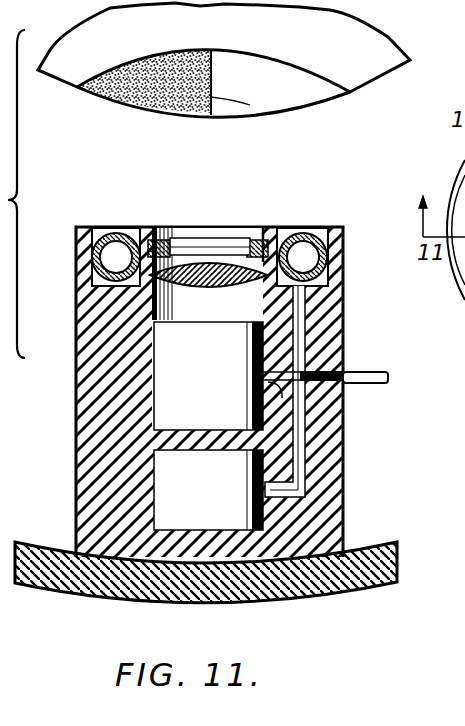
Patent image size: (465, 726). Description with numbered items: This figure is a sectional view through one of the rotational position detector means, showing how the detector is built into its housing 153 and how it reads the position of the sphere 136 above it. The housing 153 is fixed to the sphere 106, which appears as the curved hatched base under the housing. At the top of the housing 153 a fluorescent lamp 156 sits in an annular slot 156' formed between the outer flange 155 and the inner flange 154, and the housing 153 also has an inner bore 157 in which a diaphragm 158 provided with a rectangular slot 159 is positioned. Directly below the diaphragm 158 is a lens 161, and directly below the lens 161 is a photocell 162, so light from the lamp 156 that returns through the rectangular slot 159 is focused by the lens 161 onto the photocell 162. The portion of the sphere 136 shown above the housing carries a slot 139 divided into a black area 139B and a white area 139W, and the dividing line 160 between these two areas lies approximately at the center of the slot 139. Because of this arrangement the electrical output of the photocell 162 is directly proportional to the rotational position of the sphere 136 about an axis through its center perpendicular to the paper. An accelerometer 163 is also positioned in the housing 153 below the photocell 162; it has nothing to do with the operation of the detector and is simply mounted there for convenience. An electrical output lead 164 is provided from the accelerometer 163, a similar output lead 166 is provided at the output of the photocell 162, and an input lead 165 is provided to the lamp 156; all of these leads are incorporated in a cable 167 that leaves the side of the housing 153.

The sphere 106 is at (295, 595).
The sphere 136 is at (390, 42).
The slot 139 is at (234, 50).
The black area 139B is at (132, 60).
The white area 139W is at (345, 90).
The housing 153 is at (343, 295).
The inner flange 154 is at (265, 238).
The outer flange 155 is at (335, 226).
The fluorescent lamp 156 is at (337, 257).
The annular slot 156' is at (101, 230).
The inner bore 157 is at (262, 240).
The diaphragm 158 is at (158, 248).
The rectangular slot 159 is at (196, 247).
The dividing line 160 is at (250, 105).
The lens 161 is at (240, 287).
The photocell 162 is at (208, 376).
The accelerometer 163 is at (208, 490).
The output lead 164 is at (300, 452).
The input lead 165 is at (298, 333).
The output lead 166 is at (282, 398).
The cable 167 is at (388, 378).